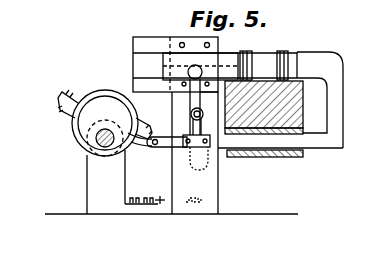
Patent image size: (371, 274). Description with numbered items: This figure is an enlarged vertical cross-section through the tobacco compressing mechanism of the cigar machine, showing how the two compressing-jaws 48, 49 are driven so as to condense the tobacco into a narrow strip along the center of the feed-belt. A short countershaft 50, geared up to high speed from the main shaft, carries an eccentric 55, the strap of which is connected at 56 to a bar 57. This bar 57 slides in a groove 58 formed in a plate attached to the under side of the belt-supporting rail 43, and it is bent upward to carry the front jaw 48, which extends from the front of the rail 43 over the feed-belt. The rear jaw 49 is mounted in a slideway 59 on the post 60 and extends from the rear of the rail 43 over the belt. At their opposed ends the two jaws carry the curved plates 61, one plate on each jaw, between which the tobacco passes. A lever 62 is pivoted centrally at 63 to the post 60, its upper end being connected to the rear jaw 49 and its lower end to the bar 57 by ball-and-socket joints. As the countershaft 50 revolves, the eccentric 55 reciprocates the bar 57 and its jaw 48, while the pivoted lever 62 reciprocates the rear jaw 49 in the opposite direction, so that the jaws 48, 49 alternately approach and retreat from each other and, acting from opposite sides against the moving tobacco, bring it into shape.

The belt-supporting rail 43 is at (264, 107).
The front jaw 48 is at (322, 62).
The rear jaw 49 is at (200, 66).
The countershaft 50 is at (101, 141).
The eccentric 55 is at (105, 123).
The strap connection 56 is at (145, 177).
The bar 57 is at (280, 141).
The groove 58 is at (277, 160).
The slideway 59 is at (133, 65).
The post 60 is at (191, 133).
The curved plates 61 is at (280, 56).
The lever 62 is at (210, 100).
The pivot 63 is at (191, 114).